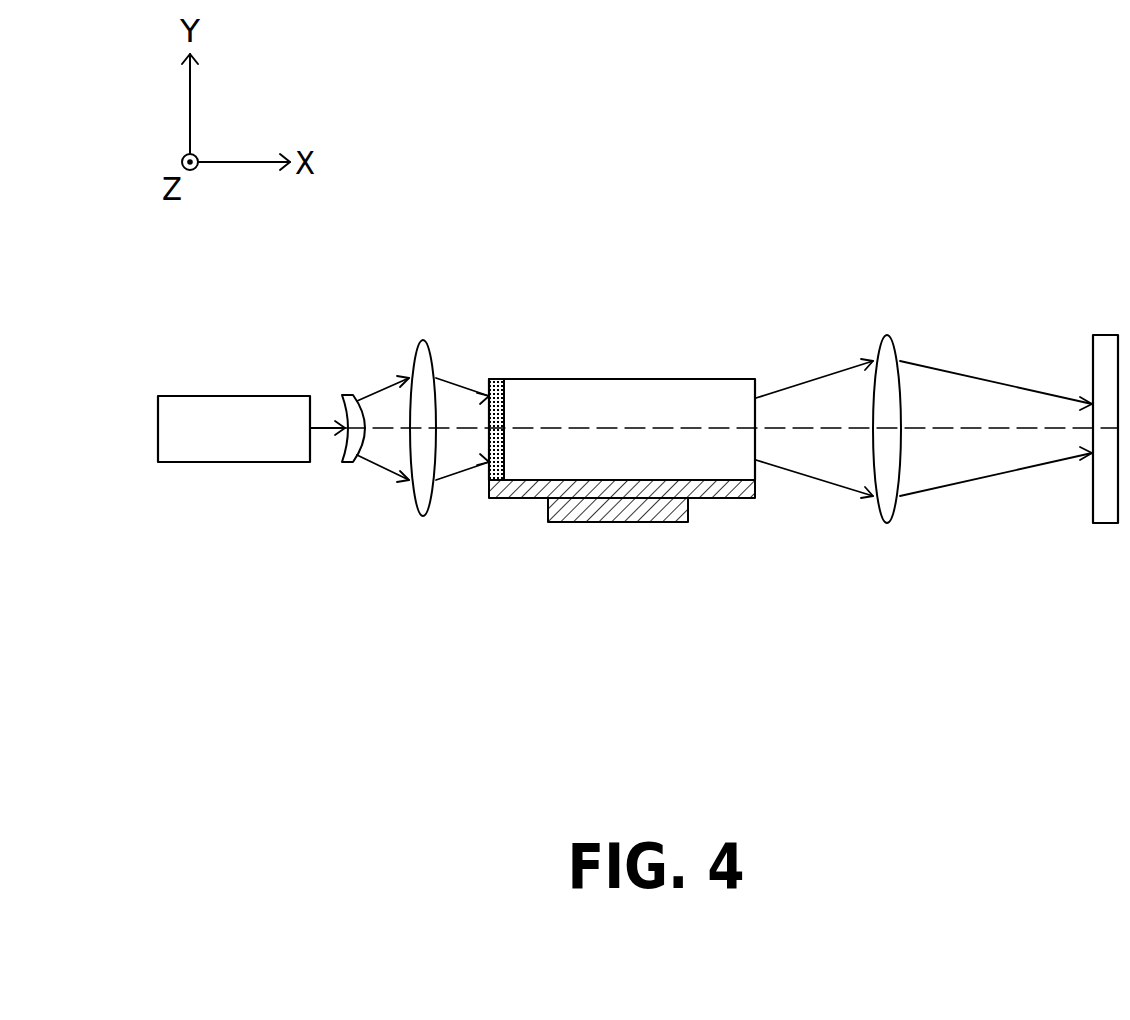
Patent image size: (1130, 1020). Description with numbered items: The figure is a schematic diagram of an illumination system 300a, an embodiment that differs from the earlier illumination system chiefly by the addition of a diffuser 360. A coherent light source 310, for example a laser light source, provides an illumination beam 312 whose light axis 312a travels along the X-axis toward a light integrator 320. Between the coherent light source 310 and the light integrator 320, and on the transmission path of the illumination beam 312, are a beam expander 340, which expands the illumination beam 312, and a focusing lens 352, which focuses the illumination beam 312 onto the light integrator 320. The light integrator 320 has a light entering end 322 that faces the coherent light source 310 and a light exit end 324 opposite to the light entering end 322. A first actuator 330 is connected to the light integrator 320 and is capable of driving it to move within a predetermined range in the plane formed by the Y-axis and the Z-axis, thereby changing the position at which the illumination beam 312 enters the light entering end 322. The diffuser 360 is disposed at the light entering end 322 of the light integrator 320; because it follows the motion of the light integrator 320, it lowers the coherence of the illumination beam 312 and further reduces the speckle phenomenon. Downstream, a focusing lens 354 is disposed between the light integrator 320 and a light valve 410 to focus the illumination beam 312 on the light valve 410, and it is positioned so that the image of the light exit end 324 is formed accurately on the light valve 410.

The illumination system 300a is at (872, 650).
The coherent light source 310 is at (260, 464).
The illumination beam 312 is at (326, 424).
The light axis 312a is at (468, 427).
The light integrator 320 is at (598, 465).
The light entering end 322 is at (507, 398).
The light exit end 324 is at (760, 383).
The first actuator 330 is at (735, 499).
The beam expander 340 is at (347, 464).
The focusing lens 352 is at (425, 518).
The focusing lens 354 is at (877, 524).
The diffuser 360 is at (497, 500).
The light valve 410 is at (1105, 524).